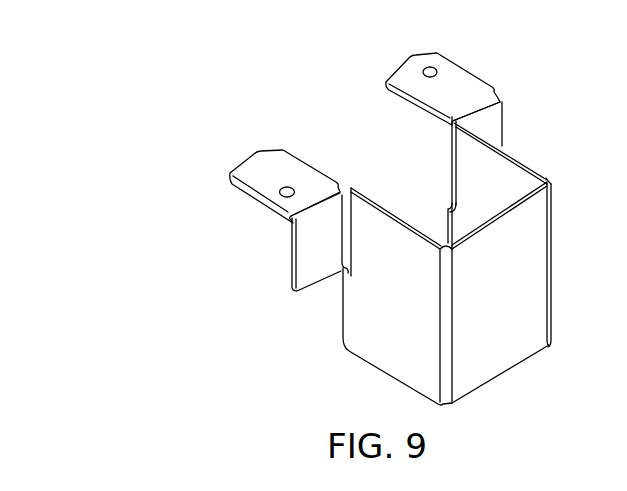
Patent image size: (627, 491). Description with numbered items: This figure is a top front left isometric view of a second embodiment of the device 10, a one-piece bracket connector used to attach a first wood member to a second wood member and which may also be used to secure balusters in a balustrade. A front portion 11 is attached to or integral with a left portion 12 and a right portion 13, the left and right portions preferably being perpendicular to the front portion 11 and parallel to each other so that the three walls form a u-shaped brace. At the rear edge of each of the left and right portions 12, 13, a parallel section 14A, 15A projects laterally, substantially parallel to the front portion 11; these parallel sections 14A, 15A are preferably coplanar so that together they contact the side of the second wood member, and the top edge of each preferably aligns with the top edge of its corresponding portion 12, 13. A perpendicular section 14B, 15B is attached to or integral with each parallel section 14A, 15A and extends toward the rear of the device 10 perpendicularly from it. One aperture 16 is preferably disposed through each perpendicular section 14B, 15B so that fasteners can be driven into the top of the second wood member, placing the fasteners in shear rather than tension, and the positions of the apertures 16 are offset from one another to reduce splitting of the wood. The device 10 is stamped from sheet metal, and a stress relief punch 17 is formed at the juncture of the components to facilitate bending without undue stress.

The device 10 is at (380, 225).
The front portion 11 is at (498, 362).
The left portion 12 is at (387, 350).
The right portion 13 is at (521, 163).
The parallel section 14A is at (305, 255).
The perpendicular section 14B is at (257, 180).
The parallel section 15A is at (495, 128).
The perpendicular section 15B is at (457, 83).
The aperture 16 is at (421, 75).
The stress relief punch 17 is at (452, 128).